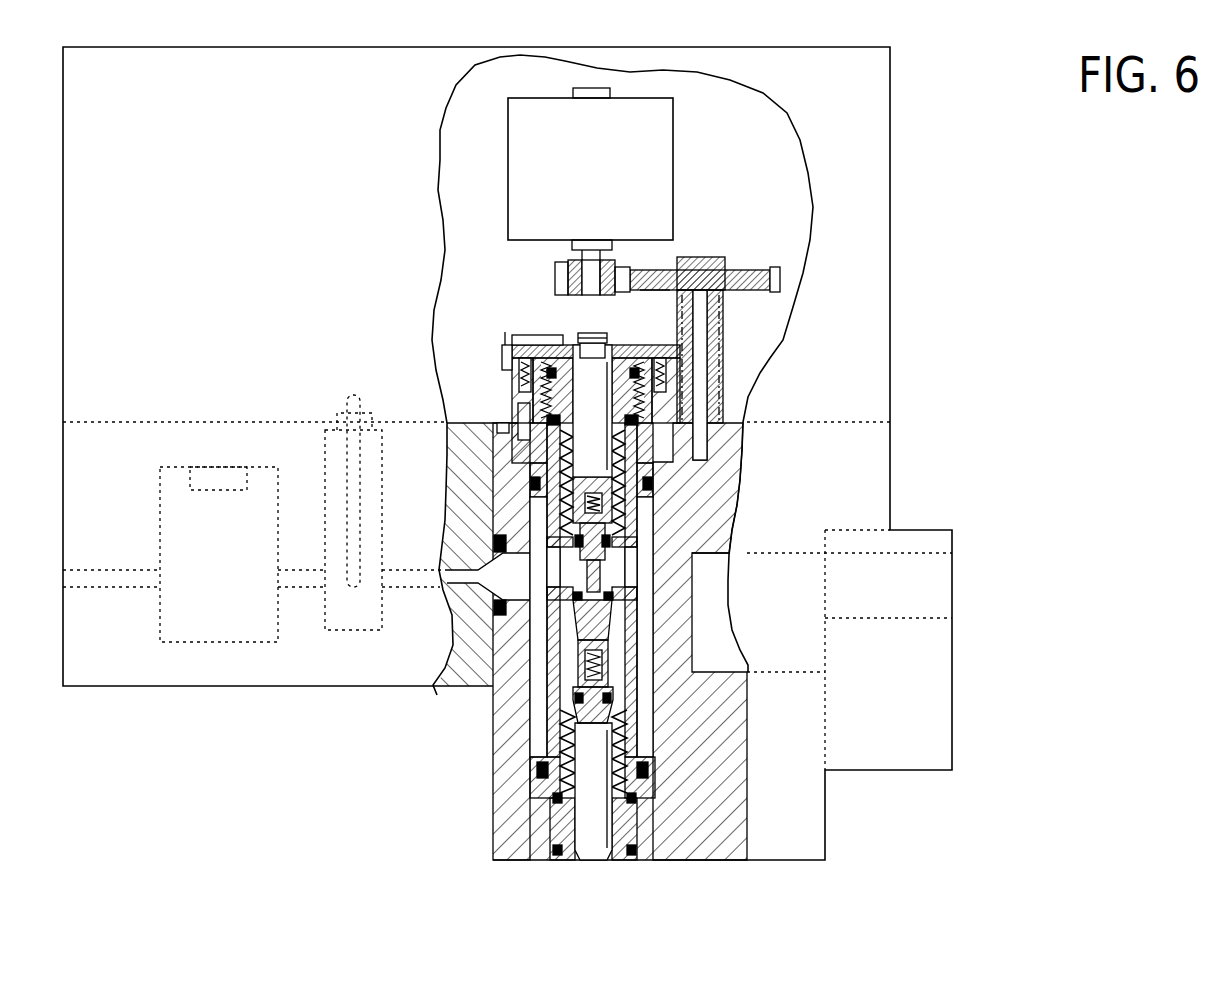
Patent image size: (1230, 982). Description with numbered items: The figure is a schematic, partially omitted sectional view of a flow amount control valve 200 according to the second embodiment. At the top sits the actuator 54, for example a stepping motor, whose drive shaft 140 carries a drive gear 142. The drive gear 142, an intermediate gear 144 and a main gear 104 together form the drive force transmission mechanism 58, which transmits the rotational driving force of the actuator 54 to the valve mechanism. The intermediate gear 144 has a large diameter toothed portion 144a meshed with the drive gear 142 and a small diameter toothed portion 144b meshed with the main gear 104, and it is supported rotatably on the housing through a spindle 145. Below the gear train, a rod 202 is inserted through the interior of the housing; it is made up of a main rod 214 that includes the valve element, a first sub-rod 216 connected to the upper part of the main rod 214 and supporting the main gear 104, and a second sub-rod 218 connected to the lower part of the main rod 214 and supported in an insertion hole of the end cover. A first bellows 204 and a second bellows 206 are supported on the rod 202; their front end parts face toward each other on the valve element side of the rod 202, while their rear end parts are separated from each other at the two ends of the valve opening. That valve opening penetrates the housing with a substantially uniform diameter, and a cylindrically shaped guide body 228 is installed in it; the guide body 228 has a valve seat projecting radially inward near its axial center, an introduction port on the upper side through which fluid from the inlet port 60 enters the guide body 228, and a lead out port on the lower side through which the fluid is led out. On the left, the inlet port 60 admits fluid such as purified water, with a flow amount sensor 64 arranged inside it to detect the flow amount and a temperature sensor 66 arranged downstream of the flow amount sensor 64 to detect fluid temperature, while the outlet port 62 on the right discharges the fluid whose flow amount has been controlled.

The flow amount control valve 200 is at (988, 111).
The actuator 54 is at (662, 171).
The drive force transmission mechanism 58 is at (655, 295).
The inlet port 60 is at (490, 626).
The outlet port 62 is at (715, 648).
The flow amount sensor 64 is at (222, 491).
The temperature sensor 66 is at (358, 578).
The main gear 104 is at (502, 352).
The drive shaft 140 is at (592, 262).
The drive gear 142 is at (555, 277).
The intermediate gear 144 is at (749, 270).
The large diameter toothed portion 144a is at (780, 278).
The small diameter toothed portion 144b is at (722, 392).
The spindle 145 is at (697, 335).
The rod 202 is at (570, 674).
The first bellows 204 is at (630, 513).
The second bellows 206 is at (540, 770).
The main rod 214 is at (595, 572).
The first sub-rod 216 is at (583, 397).
The second sub-rod 218 is at (590, 838).
The guide body 228 is at (645, 730).